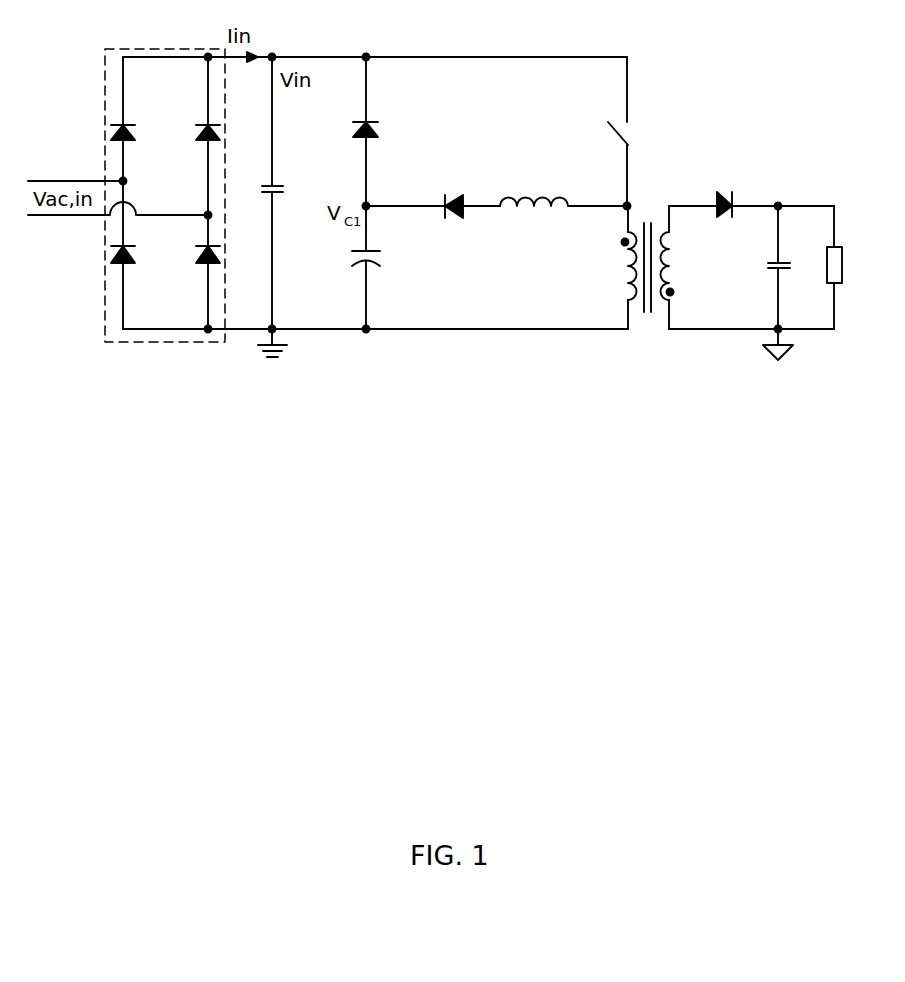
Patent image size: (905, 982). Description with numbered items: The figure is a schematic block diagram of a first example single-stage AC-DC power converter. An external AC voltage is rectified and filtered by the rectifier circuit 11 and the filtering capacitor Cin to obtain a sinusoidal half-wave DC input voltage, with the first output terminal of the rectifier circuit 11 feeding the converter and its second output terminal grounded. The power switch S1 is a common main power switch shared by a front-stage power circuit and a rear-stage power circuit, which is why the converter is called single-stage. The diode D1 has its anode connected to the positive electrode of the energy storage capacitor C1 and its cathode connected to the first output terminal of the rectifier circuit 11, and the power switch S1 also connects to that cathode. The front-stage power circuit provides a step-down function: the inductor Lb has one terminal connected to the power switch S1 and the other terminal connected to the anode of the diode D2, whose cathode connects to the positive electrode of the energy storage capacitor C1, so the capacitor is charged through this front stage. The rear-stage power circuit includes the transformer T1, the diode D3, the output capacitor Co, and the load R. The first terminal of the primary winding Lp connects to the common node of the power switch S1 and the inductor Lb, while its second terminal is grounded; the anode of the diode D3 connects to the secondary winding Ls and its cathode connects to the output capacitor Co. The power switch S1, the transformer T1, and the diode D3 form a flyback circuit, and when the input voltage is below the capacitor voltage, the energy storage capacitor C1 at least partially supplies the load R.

The rectifier circuit 11 is at (224, 97).
The filtering capacitor Cin is at (288, 193).
The diode D1 is at (384, 131).
The energy storage capacitor C1 is at (381, 267).
The diode D2 is at (433, 223).
The inductor Lb is at (564, 185).
The power switch S1 is at (638, 131).
The transformer T1 is at (646, 280).
The primary winding Lp is at (613, 267).
The secondary winding Ls is at (681, 267).
The diode D3 is at (723, 190).
The output capacitor Co is at (761, 267).
The load R is at (810, 267).